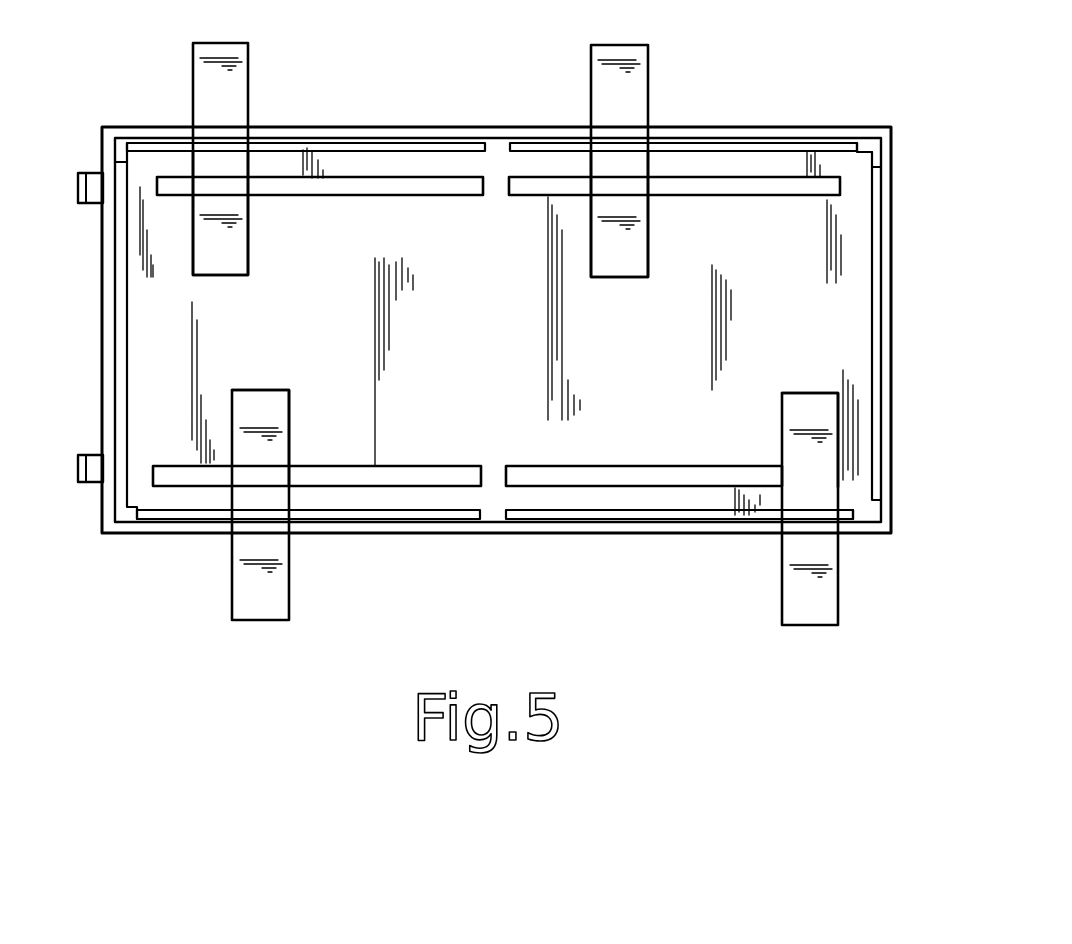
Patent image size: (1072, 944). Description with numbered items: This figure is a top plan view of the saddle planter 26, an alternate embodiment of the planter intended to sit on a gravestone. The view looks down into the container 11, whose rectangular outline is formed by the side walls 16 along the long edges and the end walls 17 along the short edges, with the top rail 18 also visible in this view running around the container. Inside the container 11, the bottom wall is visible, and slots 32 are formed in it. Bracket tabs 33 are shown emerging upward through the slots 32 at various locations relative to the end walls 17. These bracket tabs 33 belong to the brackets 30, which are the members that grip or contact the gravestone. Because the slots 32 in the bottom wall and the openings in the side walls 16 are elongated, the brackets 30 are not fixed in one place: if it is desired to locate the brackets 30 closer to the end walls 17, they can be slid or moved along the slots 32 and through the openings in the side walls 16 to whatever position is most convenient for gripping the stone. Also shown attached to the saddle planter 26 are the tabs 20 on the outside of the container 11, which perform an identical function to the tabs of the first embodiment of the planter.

The container 11 is at (102, 302).
The side walls 16 is at (414, 140).
The end walls 17 is at (128, 303).
The top rail 18 is at (656, 532).
The tabs 20 is at (76, 187).
The saddle planter 26 is at (907, 520).
The brackets 30 is at (250, 64).
The slots 32 is at (410, 196).
The bracket tabs 33 is at (250, 255).